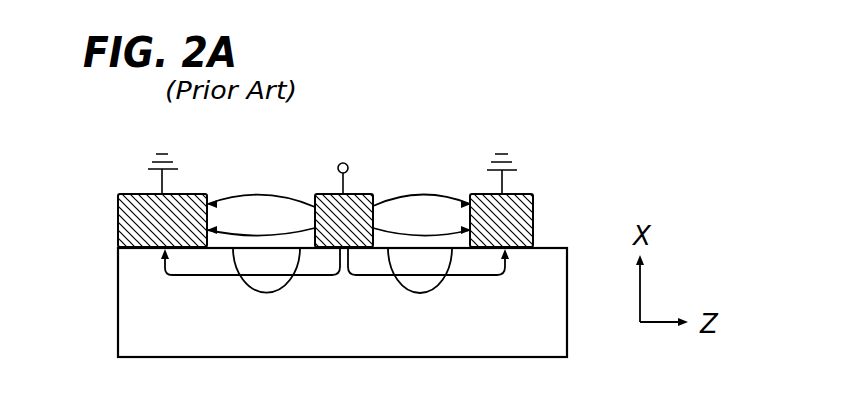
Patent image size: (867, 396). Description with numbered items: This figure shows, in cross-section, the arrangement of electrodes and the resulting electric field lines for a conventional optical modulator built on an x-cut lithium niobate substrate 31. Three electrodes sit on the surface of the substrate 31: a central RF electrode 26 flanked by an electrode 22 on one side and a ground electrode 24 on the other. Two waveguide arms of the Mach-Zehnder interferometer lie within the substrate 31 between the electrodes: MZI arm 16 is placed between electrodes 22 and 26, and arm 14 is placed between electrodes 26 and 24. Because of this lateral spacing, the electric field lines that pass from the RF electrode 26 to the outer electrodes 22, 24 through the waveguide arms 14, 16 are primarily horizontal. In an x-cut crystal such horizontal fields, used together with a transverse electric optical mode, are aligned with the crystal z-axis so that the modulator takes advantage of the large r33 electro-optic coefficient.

The MZI arm 14 is at (287, 279).
The MZI arm 16 is at (443, 279).
The electrode 22 is at (533, 217).
The ground electrode 24 is at (118, 228).
The RF electrode 26 is at (366, 194).
The substrate 31 is at (135, 316).